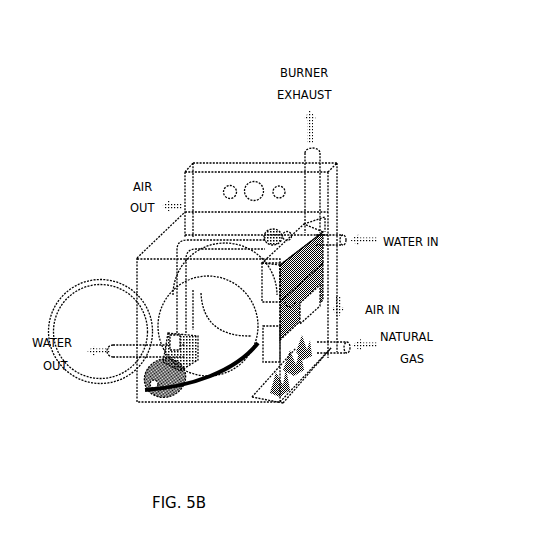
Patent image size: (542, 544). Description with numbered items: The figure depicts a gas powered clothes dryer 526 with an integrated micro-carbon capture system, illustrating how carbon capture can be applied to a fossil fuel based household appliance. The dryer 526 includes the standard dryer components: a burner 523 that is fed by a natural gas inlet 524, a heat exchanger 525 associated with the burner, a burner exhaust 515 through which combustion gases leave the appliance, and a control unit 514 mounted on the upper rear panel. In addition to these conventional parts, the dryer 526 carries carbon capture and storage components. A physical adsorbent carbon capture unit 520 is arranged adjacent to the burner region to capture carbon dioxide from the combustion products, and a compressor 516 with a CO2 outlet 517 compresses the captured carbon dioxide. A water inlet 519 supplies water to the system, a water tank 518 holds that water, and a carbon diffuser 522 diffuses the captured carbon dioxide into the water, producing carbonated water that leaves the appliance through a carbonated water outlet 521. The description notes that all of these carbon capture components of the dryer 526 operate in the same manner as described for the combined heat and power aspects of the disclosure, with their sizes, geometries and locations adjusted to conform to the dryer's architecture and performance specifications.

The control unit 514 is at (247, 181).
The burner exhaust 515 is at (314, 159).
The compressor 516 is at (280, 259).
The CO2 outlet 517 is at (182, 247).
The water tank 518 is at (170, 293).
The water inlet 519 is at (339, 236).
The physical adsorbent carbon capture unit 520 is at (330, 260).
The carbonated water outlet 521 is at (127, 354).
The carbon diffuser 522 is at (186, 380).
The burner 523 is at (270, 388).
The natural gas inlet 524 is at (338, 349).
The heat exchanger 525 is at (294, 338).
The dryer 526 is at (172, 83).